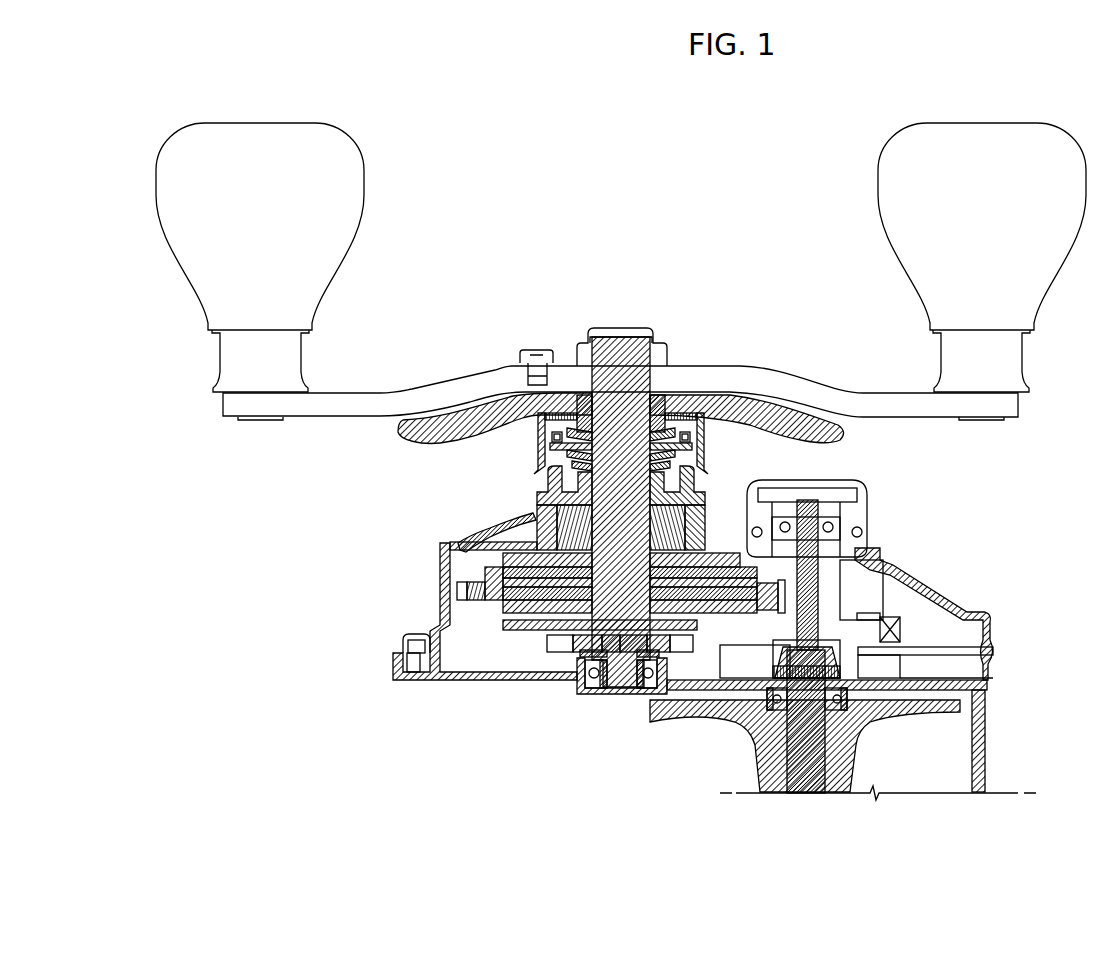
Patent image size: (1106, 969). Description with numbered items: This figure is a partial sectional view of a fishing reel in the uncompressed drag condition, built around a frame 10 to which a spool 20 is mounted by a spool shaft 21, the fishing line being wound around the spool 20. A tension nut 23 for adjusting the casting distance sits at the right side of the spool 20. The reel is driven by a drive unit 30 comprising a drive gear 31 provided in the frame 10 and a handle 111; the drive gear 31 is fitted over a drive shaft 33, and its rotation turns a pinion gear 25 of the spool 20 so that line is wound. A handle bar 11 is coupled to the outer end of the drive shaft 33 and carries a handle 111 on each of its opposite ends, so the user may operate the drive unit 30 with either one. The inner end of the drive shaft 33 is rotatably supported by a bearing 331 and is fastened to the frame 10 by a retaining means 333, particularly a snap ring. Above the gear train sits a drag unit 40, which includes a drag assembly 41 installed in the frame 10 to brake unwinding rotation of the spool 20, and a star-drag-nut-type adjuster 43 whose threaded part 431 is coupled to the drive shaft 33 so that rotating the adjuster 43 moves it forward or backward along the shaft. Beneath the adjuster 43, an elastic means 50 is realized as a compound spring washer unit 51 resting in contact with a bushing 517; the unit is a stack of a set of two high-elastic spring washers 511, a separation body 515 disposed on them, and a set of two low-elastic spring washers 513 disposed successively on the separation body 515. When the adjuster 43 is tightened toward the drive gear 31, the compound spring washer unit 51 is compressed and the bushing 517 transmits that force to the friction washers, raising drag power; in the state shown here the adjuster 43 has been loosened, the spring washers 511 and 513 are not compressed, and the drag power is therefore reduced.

The handle 111 is at (312, 155).
The handle bar 11 is at (437, 392).
The threaded part 431 is at (640, 397).
The drag unit 40 is at (778, 252).
The adjuster 43 is at (695, 405).
The drag assembly 41 is at (712, 545).
The elastic means 50 is at (453, 456).
The compound spring washer unit 51 is at (262, 432).
The low-elastic spring washer 513 is at (550, 437).
The separation body 515 is at (550, 446).
The high-elastic spring washer 511 is at (567, 458).
The bushing 517 is at (583, 495).
The drive unit 30 is at (333, 543).
The drive shaft 33 is at (603, 560).
The drive gear 31 is at (475, 578).
The frame 10 is at (448, 686).
The retaining means 333 is at (572, 660).
The bearing 331 is at (584, 684).
The tension nut 23 is at (870, 485).
The pinion gear 25 is at (793, 577).
The spool shaft 21 is at (807, 563).
The spool 20 is at (837, 795).